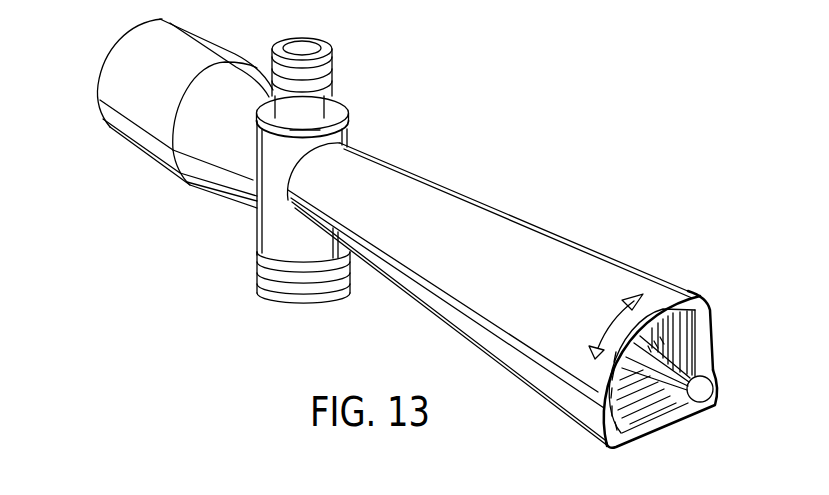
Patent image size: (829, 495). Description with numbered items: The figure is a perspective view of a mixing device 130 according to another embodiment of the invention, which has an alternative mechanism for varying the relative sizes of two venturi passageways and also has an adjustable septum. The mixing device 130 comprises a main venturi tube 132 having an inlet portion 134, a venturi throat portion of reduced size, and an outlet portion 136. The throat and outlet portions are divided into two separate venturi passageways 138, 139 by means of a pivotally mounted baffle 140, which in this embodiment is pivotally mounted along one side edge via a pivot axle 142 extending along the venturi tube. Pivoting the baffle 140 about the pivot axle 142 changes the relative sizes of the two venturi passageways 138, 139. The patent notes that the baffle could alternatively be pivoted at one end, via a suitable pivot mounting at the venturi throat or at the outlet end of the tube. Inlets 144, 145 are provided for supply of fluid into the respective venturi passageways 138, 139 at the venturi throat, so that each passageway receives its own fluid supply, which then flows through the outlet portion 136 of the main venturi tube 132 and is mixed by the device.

The mixing device 130 is at (548, 220).
The main venturi tube 132 is at (181, 191).
The inlet portion 134 is at (125, 50).
The outlet portion 136 is at (442, 198).
The venturi passageway 138 is at (681, 320).
The venturi passageway 139 is at (638, 413).
The baffle 140 is at (657, 353).
The pivot axle 142 is at (705, 392).
The inlet 144 is at (332, 63).
The inlet 145 is at (263, 245).